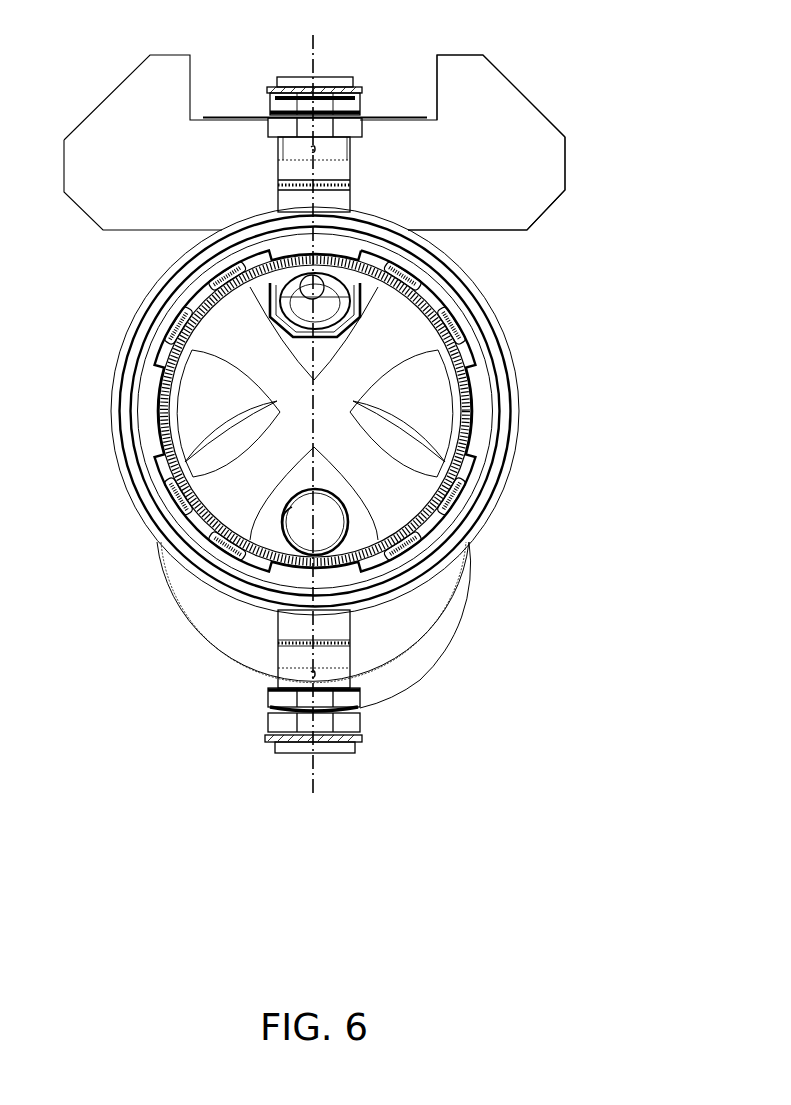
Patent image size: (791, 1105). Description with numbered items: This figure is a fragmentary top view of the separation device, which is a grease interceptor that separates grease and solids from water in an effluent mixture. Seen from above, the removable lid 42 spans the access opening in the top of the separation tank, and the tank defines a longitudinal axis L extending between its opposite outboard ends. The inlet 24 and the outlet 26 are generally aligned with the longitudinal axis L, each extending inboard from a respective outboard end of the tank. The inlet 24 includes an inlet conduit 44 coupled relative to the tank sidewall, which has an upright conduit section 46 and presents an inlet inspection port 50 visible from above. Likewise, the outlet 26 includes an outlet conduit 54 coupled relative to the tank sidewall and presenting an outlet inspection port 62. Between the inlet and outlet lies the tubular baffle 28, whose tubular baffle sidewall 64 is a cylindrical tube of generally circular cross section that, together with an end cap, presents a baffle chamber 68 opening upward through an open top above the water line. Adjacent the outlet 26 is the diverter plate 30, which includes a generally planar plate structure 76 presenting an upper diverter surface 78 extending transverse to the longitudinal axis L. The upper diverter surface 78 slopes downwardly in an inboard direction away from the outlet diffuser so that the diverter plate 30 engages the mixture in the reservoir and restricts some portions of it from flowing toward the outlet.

The inlet 24 is at (283, 655).
The outlet 26 is at (342, 174).
The tubular baffle 28 is at (440, 662).
The diverter plate 30 is at (540, 126).
The removable lid 42 is at (400, 324).
The inlet conduit 44 is at (345, 677).
The upright conduit section 46 is at (348, 509).
The inlet inspection port 50 is at (290, 512).
The outlet conduit 54 is at (286, 171).
The outlet inspection port 62 is at (290, 306).
The tubular baffle sidewall 64 is at (158, 601).
The baffle chamber 68 is at (450, 633).
The planar plate structure 76 is at (533, 203).
The upper diverter surface 78 is at (483, 133).
The longitudinal axis L is at (318, 767).